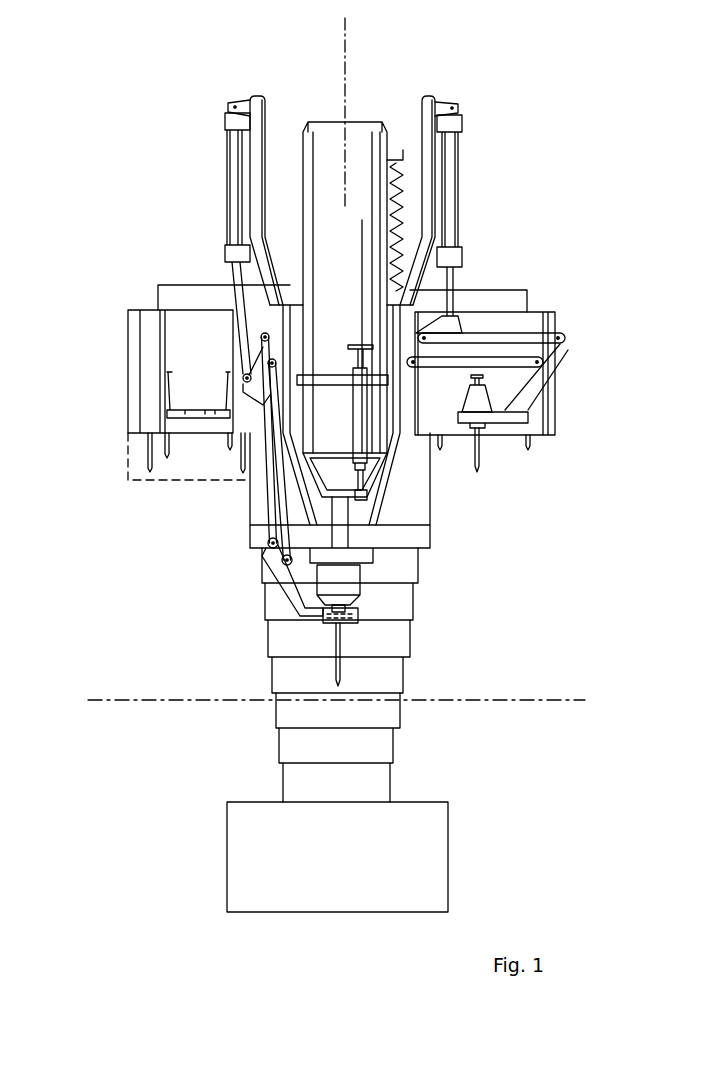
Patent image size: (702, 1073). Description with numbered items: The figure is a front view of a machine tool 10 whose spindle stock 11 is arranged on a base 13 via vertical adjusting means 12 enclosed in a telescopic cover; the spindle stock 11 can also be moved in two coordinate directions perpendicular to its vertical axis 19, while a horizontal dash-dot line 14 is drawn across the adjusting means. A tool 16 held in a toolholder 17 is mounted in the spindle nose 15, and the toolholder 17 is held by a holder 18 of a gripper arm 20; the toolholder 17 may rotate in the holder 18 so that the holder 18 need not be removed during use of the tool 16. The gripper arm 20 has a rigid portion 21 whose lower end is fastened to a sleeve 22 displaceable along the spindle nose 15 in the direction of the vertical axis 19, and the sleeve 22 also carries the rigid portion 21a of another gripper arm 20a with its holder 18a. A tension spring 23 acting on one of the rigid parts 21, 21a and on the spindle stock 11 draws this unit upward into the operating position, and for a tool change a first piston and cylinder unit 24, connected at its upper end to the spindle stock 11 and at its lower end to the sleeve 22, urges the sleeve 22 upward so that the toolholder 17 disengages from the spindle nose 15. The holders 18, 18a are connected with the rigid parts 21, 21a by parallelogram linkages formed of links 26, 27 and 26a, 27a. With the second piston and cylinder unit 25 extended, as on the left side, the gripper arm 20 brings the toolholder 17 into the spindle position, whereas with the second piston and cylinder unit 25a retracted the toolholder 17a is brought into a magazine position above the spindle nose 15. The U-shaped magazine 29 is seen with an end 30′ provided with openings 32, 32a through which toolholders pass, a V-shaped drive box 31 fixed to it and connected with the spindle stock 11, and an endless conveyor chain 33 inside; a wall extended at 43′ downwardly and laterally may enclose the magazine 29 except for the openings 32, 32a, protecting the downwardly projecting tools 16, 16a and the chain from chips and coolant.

The machine tool 10 is at (138, 604).
The spindle stock 11 is at (327, 148).
The vertical adjusting means 12 is at (386, 712).
The base 13 is at (429, 823).
The horizontal axis / centerline 14 is at (524, 694).
The spindle nose 15 is at (350, 575).
The tool 16 is at (340, 647).
The tool 16a is at (475, 455).
The toolholder 17 is at (356, 606).
The toolholder 17a is at (490, 400).
The holder 18 is at (307, 608).
The holder 18a is at (513, 412).
The vertical axis 19 is at (343, 31).
The gripper arm 20 is at (272, 310).
The gripper arm 20a is at (450, 278).
The rigid portion 21 is at (257, 165).
The rigid portion 21a is at (433, 165).
The sleeve 22 is at (417, 525).
The tension spring 23 is at (396, 234).
The first piston and cylinder unit 24 is at (358, 426).
The second piston and cylinder unit 25 is at (233, 198).
The second piston and cylinder unit 25a is at (450, 203).
The link 26 is at (272, 513).
The link 26a is at (535, 338).
The link 27 is at (275, 532).
The link 27a is at (530, 370).
The magazine 29 is at (112, 345).
The end of magazine leg 30′ is at (148, 379).
The drive box 31 is at (185, 292).
The opening 32 is at (163, 336).
The opening 32a is at (517, 312).
The endless conveyor chain 33 is at (204, 416).
The extended wall portion 43′ is at (126, 472).